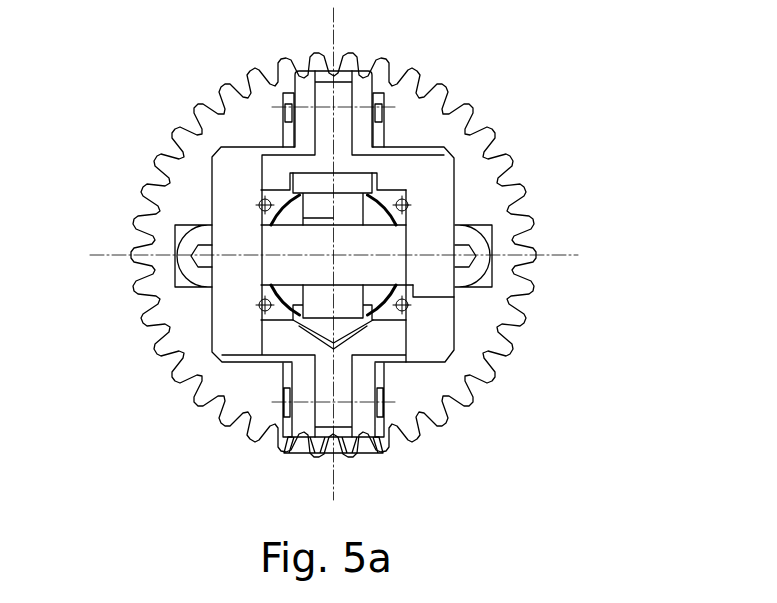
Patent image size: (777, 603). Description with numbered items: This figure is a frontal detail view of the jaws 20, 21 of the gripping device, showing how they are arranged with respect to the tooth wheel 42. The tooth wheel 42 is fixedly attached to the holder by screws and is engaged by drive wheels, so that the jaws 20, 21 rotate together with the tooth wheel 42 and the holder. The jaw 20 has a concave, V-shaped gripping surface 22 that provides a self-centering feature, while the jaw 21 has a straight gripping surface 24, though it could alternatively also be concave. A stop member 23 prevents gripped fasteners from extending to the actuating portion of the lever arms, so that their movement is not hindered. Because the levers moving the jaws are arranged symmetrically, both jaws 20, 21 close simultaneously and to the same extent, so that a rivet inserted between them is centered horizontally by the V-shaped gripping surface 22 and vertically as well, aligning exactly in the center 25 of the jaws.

The jaw 20 is at (237, 334).
The jaw 21 is at (430, 186).
The V-shaped gripping surface 22 is at (364, 334).
The stop member 23 is at (387, 275).
The straight gripping surface 24 is at (308, 175).
The center of jaws 25 is at (333, 257).
The tooth wheel 42 is at (412, 73).